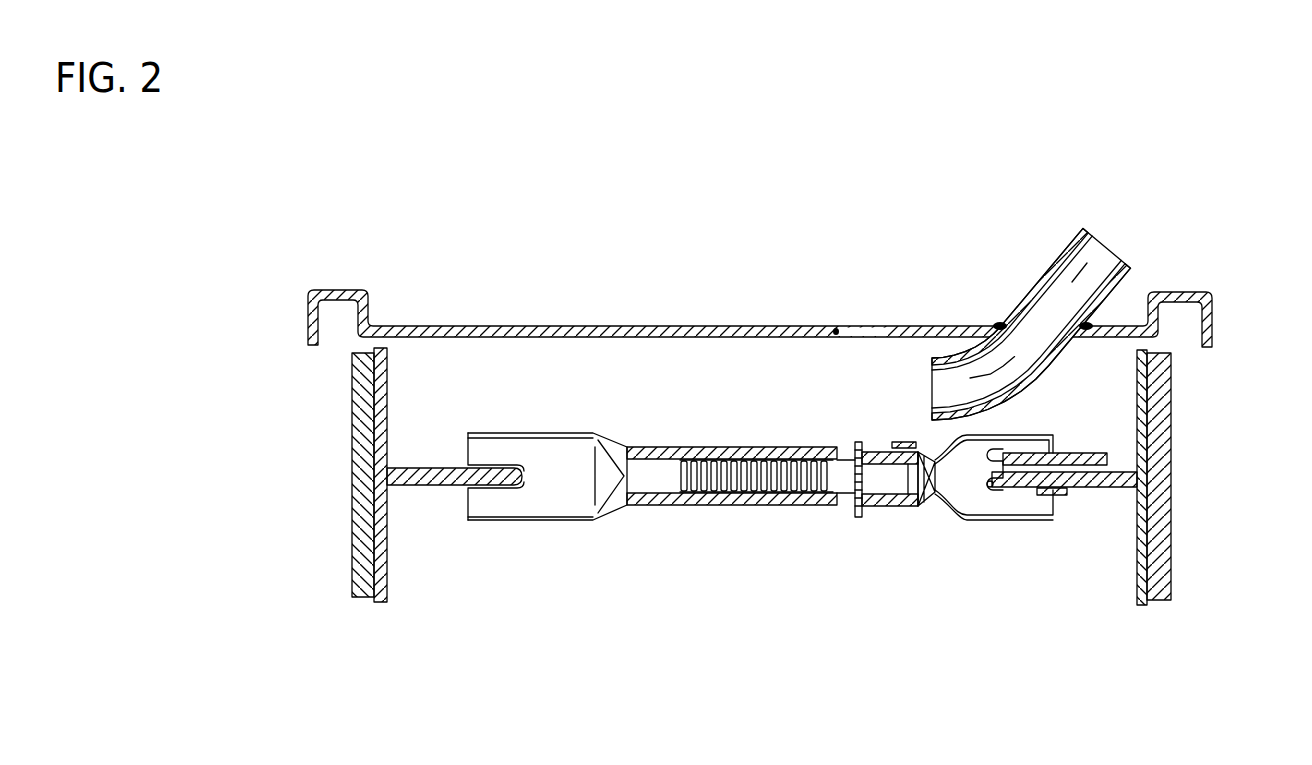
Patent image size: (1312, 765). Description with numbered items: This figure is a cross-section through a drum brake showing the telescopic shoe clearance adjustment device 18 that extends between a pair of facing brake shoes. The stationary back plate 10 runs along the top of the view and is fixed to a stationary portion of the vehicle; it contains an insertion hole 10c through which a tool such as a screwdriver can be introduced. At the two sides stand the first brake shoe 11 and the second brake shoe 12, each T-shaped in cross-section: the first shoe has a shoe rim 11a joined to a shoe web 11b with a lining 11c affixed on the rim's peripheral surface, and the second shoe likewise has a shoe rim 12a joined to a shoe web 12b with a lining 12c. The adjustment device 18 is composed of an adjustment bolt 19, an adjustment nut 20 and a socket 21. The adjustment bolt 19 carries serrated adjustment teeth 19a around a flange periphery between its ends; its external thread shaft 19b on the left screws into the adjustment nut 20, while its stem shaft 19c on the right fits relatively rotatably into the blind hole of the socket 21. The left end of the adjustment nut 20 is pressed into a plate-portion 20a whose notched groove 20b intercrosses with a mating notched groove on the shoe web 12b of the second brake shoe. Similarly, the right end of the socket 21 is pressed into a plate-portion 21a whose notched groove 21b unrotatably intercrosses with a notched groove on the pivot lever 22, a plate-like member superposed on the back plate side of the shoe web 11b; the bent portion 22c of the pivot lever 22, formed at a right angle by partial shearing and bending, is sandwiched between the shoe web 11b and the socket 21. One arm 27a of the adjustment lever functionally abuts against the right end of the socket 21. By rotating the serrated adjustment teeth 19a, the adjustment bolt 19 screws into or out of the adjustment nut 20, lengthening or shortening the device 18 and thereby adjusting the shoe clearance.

The back plate 10 is at (760, 327).
The insertion hole 10c is at (855, 326).
The first brake shoe 11 is at (1190, 516).
The shoe rim 11a is at (1142, 606).
The shoe web 11b is at (1107, 488).
The lining 11c is at (1160, 601).
The second brake shoe 12 is at (336, 514).
The shoe rim 12a is at (380, 603).
The shoe web 12b is at (423, 485).
The lining 12c is at (360, 598).
The telescopic shoe clearance adjustment device 18 is at (748, 506).
The adjustment bolt 19 is at (887, 543).
The serrated adjustment teeth 19a is at (858, 518).
The external thread shaft 19b is at (798, 506).
The stem shaft 19c is at (880, 480).
The adjustment nut 20 is at (579, 521).
The plate-portion 20a is at (563, 500).
The notched groove 20b is at (505, 488).
The socket 21 is at (996, 493).
The plate-portion 21a is at (1017, 500).
The notched groove 21b is at (1000, 462).
The pivot lever 22 is at (1085, 453).
The bent portion 22c is at (997, 495).
The arm 27a is at (1066, 496).